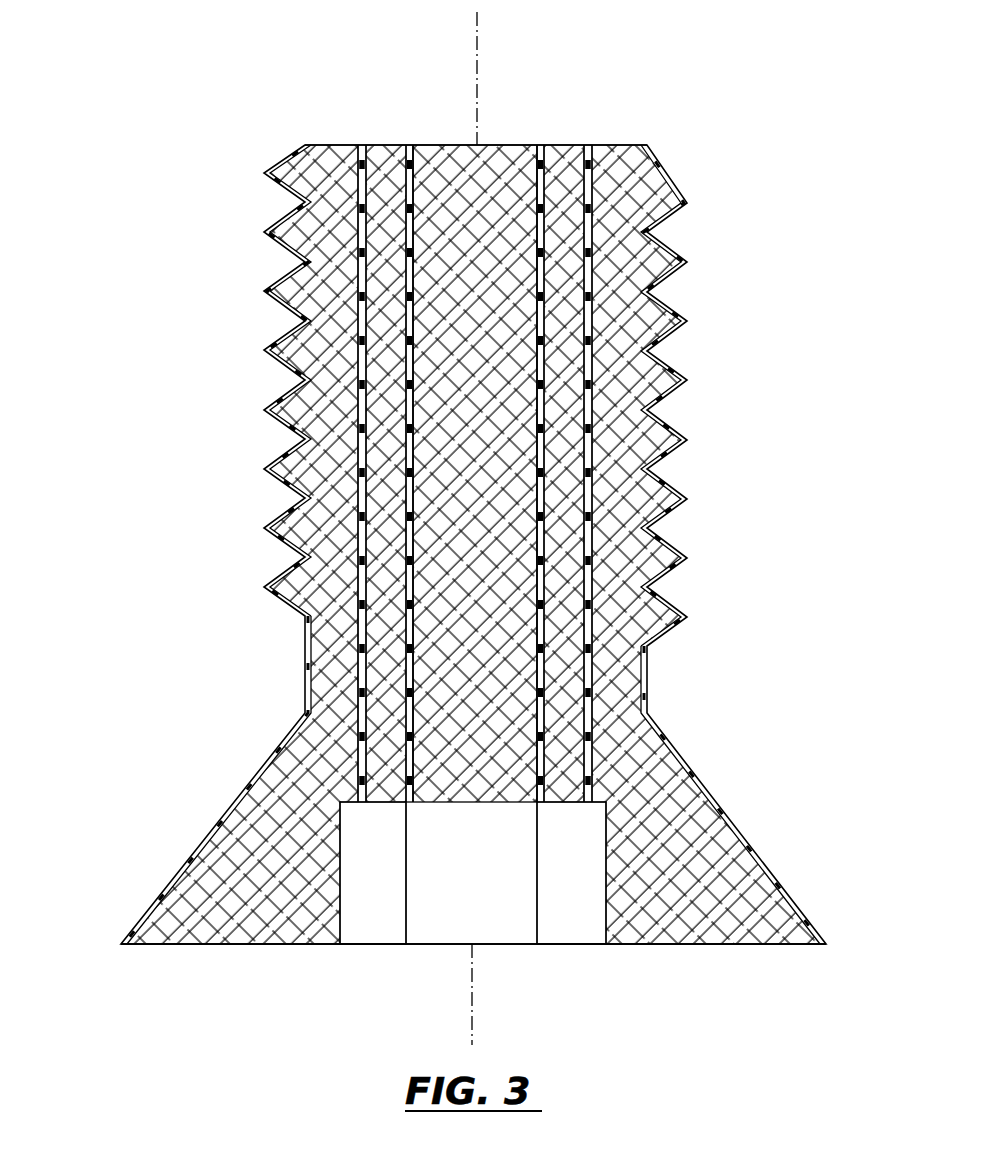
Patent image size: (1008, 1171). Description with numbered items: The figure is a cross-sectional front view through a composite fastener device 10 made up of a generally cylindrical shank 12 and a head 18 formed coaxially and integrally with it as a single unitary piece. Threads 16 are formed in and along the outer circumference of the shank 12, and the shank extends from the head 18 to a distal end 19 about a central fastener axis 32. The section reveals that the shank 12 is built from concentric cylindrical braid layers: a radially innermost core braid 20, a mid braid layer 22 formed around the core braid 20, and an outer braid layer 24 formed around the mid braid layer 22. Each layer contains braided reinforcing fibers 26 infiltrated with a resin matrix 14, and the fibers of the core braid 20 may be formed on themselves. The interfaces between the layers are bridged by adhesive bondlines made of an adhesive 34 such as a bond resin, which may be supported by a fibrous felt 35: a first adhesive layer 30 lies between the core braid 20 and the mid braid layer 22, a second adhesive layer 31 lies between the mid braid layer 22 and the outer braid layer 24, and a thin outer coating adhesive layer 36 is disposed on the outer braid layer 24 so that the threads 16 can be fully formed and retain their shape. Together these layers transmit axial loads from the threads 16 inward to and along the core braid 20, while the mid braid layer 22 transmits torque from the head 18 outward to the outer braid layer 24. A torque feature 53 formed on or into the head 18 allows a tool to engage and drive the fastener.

The fastener device 10 is at (748, 534).
The shank 12 is at (692, 244).
The resin matrix 14 is at (515, 153).
The threads 16 is at (264, 350).
The head 18 is at (755, 856).
The distal end 19 is at (495, 145).
The core braid 20 is at (470, 790).
The mid braid layer 22 is at (378, 791).
The outer braid layer 24 is at (280, 935).
The braided reinforcing fibers 26 is at (531, 419).
The first adhesive layer 30 is at (411, 145).
The second adhesive layer 31 is at (363, 145).
The fastener axis 32 is at (477, 54).
The adhesive 34 is at (474, 442).
The fibrous felt 35 is at (442, 442).
The outer coating adhesive layer 36 is at (200, 851).
The torque feature 53 is at (365, 897).